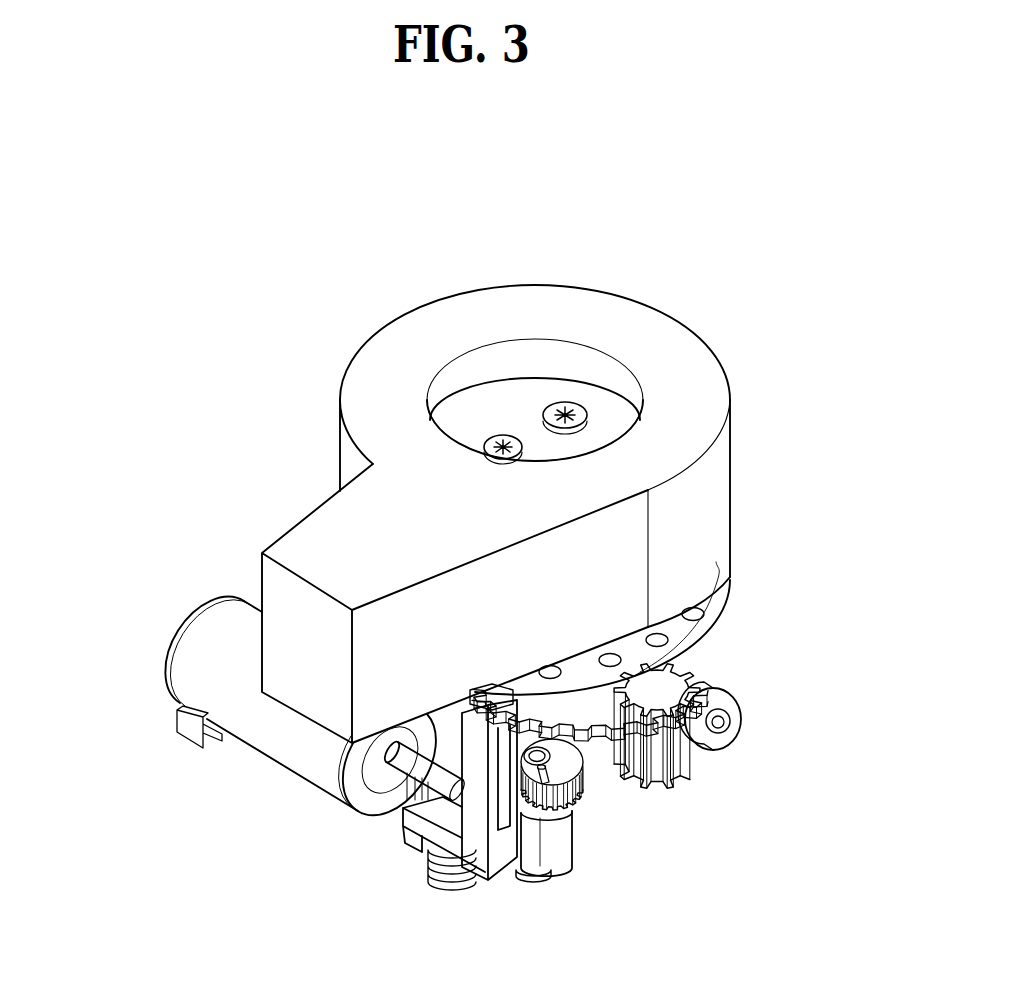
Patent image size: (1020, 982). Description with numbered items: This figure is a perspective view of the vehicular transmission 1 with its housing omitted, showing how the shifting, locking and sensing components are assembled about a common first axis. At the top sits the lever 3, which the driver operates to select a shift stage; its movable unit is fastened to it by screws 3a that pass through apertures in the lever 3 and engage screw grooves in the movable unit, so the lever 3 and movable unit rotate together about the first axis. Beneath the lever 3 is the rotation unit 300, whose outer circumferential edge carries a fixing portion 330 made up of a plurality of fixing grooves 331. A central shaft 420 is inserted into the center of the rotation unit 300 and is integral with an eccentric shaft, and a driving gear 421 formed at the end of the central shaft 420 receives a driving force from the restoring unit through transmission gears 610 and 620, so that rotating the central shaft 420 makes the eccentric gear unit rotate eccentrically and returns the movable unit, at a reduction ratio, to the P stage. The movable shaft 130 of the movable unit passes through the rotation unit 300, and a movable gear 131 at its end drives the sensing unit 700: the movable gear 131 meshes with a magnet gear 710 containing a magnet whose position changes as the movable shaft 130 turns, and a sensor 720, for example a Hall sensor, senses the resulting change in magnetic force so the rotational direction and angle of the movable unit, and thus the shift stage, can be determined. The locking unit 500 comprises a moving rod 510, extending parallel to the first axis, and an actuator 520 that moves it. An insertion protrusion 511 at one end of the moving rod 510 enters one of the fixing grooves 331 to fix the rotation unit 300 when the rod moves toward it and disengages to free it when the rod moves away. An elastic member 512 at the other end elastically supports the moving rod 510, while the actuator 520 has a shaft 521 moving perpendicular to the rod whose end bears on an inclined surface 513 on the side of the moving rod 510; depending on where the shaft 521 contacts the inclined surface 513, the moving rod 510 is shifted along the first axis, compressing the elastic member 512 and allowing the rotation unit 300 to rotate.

The vehicular transmission 1 is at (748, 250).
The lever 3 is at (328, 537).
The screws 3a is at (504, 445).
The movable shaft 130 is at (497, 690).
The movable gear 131 is at (548, 778).
The rotation unit 300 is at (750, 580).
The fixing portion 330 is at (712, 605).
The fixing grooves 331 is at (700, 606).
The central shaft 420 is at (503, 683).
The driving gear 421 is at (603, 763).
The locking unit 500 is at (245, 778).
The moving rod 510 is at (473, 848).
The insertion protrusion 511 is at (493, 805).
The elastic member 512 is at (437, 875).
The inclined surface 513 is at (412, 845).
The actuator 520 is at (310, 763).
The shaft 521 is at (395, 768).
The transmission gear 610 is at (733, 710).
The transmission gear 620 is at (663, 767).
The sensing unit 700 is at (596, 843).
The magnet gear 710 is at (567, 843).
The sensor 720 is at (535, 878).